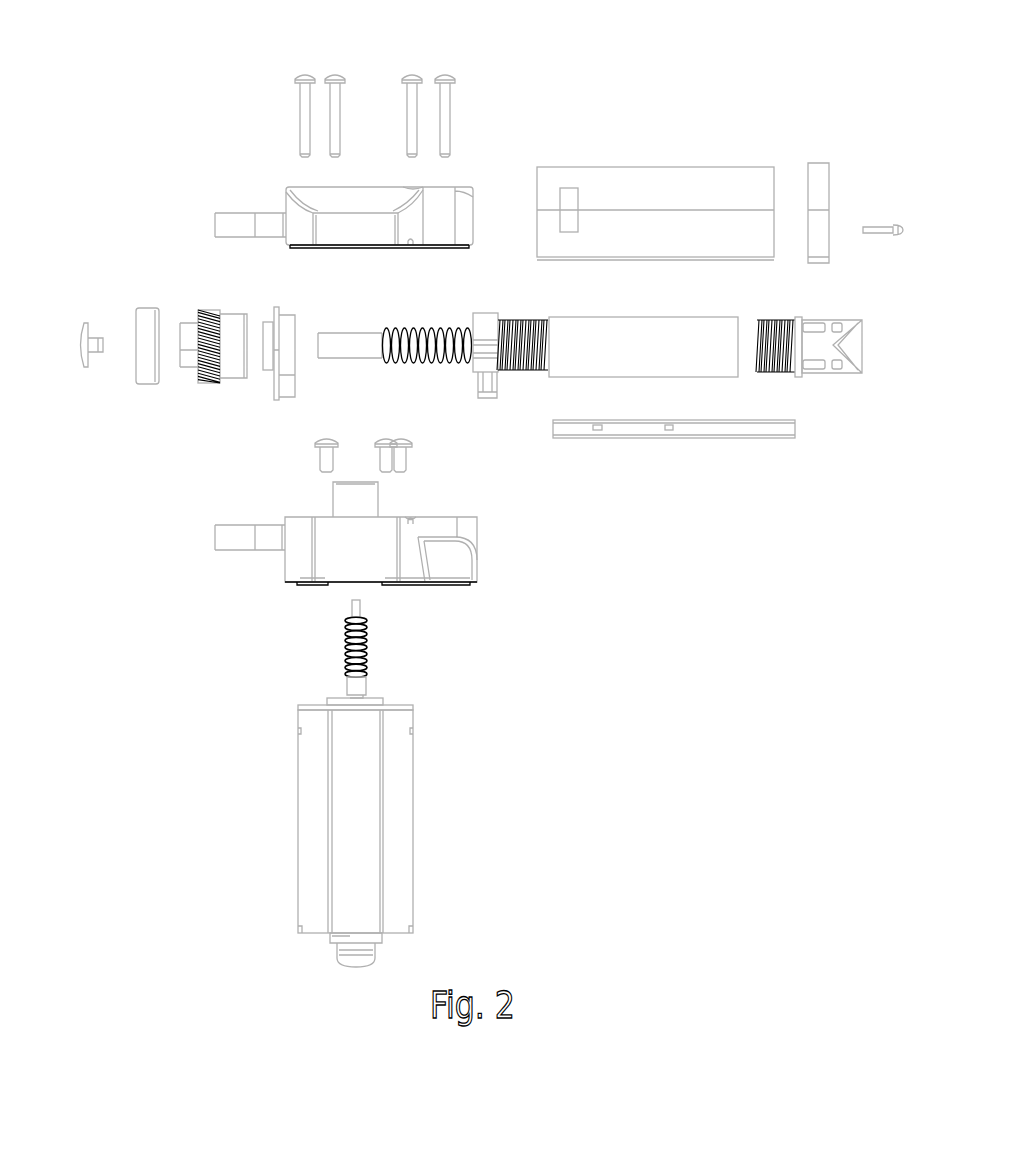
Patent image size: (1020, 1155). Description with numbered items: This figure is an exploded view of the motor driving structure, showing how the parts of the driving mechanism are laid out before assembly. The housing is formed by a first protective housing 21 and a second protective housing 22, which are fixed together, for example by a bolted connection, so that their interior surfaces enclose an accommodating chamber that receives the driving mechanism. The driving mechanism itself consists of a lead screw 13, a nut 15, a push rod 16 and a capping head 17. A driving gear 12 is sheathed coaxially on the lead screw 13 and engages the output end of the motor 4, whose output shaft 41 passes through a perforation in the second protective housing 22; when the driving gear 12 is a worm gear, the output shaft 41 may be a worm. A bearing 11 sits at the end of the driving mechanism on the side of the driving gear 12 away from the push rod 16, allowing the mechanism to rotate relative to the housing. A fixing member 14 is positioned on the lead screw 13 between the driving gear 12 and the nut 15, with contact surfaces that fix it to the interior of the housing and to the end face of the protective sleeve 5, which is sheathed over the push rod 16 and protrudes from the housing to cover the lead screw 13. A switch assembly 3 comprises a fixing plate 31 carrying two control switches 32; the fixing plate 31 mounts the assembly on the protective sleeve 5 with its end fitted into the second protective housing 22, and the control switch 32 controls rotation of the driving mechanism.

The switch assembly 3 is at (715, 515).
The motor 4 is at (352, 820).
The protective sleeve 5 is at (673, 188).
The bearing 11 is at (142, 349).
The driving gear 12 is at (199, 368).
The lead screw 13 is at (433, 363).
The fixing member 14 is at (285, 368).
The nut 15 is at (487, 327).
The push rod 16 is at (589, 343).
The capping head 17 is at (812, 345).
The first protective housing 21 is at (300, 227).
The second protective housing 22 is at (327, 550).
The fixing plate 31 is at (725, 428).
The control switch 32 is at (602, 430).
The output shaft 41 is at (348, 642).